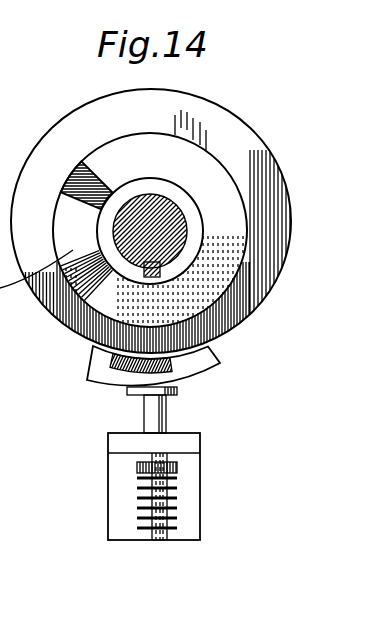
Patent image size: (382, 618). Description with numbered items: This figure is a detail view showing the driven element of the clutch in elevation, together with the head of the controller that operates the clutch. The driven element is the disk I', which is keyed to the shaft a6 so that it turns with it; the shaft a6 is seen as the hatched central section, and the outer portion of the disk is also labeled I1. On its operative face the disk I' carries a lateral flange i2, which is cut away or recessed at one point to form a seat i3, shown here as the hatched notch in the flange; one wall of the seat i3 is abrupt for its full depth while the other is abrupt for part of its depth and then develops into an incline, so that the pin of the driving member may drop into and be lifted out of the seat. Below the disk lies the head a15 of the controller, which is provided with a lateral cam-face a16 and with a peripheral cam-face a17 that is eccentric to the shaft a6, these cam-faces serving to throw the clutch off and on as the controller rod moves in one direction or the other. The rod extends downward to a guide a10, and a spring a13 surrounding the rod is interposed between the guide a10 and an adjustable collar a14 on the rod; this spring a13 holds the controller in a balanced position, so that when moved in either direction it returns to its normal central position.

The outer ring casing I1 is at (46, 332).
The disk I' is at (161, 234).
The lateral flange i2 is at (123, 231).
The seat i3 is at (83, 185).
The shaft a6 is at (182, 212).
The head a15 is at (86, 367).
The lateral cam-face a16 is at (169, 362).
The peripheral cam-face a17 is at (106, 383).
The guide a10 is at (195, 446).
The adjustable collar a14 is at (138, 468).
The spring a13 is at (178, 499).